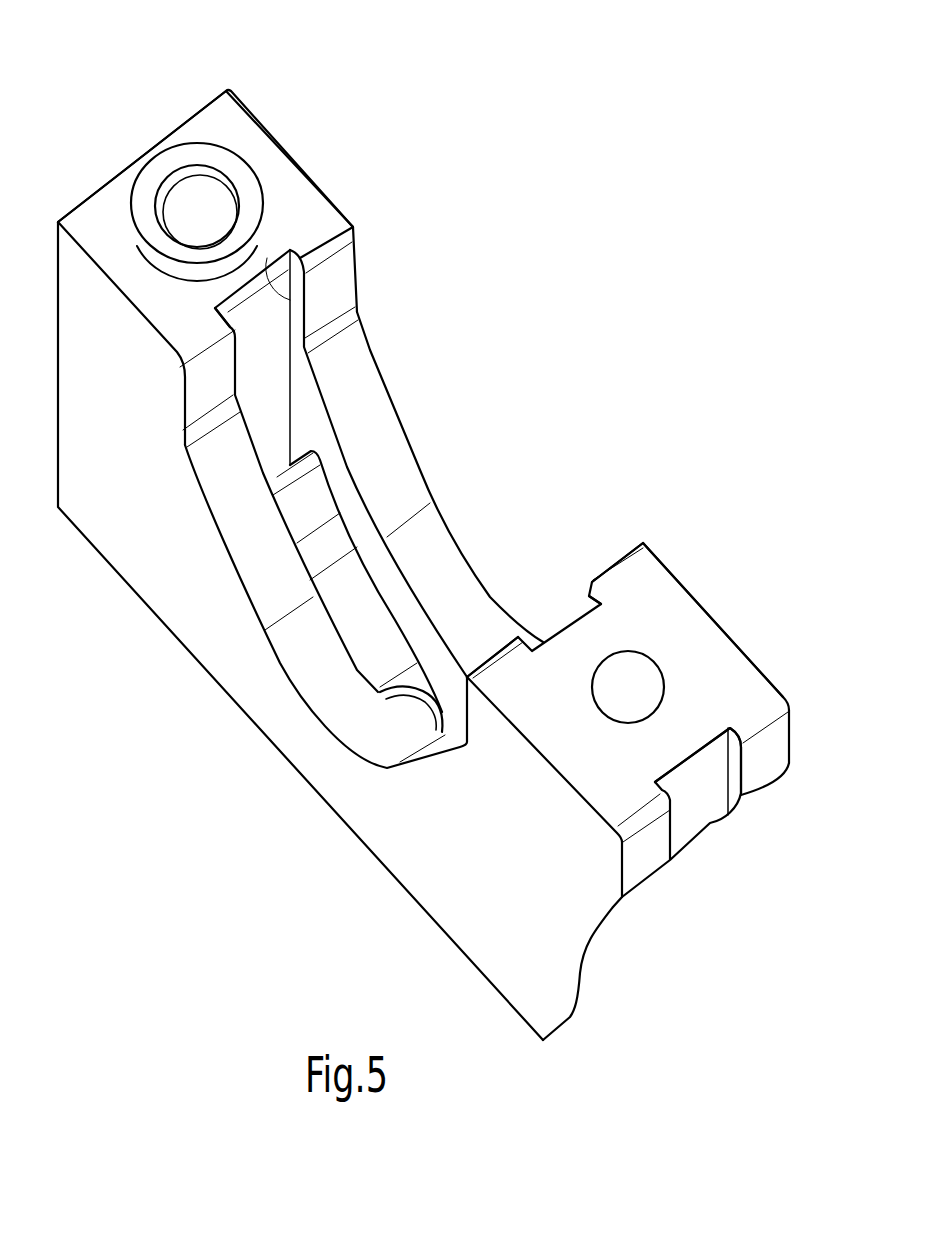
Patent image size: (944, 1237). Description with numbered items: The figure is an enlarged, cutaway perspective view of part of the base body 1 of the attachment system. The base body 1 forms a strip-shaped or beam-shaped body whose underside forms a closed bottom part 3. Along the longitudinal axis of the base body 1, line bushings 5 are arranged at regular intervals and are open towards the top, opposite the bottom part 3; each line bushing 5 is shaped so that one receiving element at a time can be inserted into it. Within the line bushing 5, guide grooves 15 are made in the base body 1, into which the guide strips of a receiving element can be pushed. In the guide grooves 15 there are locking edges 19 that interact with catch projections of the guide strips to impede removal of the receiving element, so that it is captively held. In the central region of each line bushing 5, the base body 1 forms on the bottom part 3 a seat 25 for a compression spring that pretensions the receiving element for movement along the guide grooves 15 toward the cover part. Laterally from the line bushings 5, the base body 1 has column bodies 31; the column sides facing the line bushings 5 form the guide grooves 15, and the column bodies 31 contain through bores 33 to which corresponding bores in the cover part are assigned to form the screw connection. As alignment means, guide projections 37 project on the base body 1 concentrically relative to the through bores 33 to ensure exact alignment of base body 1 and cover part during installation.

The base body 1 is at (597, 340).
The bottom part 3 is at (417, 680).
The line bushing 5 is at (333, 292).
The guide groove 15 is at (268, 258).
The locking edge 19 is at (327, 473).
The seat 25 is at (417, 708).
The column body 31 is at (177, 310).
The through bore 33 is at (193, 205).
The guide projection 37 is at (147, 178).